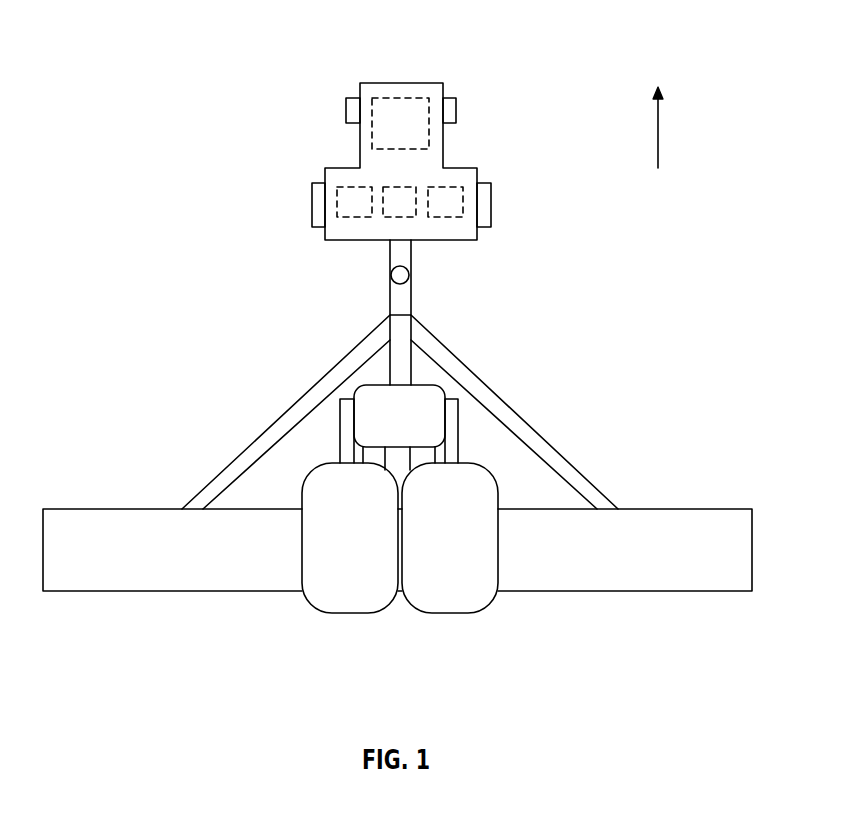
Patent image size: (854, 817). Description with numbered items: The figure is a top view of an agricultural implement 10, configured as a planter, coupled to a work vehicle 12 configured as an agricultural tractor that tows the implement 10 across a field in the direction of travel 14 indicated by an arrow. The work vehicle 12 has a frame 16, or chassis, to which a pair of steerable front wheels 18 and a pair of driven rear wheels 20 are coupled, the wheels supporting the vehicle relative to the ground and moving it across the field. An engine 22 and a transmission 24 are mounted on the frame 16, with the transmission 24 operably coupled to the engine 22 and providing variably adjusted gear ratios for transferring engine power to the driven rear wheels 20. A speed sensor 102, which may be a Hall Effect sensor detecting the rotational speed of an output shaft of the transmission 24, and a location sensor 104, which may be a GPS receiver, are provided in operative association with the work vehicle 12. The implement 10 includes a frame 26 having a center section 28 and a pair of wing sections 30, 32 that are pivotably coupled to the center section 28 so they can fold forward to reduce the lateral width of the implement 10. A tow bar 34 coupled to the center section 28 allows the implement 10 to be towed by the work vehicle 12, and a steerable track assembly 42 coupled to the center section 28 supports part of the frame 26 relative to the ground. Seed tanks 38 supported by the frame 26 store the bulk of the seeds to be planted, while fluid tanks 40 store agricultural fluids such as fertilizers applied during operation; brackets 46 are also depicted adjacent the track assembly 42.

The agricultural implement 10 is at (178, 390).
The work vehicle 12 is at (236, 52).
The direction of travel 14 is at (658, 128).
The frame 16 is at (333, 167).
The steerable front wheels 18 is at (346, 110).
The driven rear wheels 20 is at (312, 197).
The engine 22 is at (385, 97).
The transmission 24 is at (398, 188).
The frame 26 is at (397, 587).
The center section 28 is at (390, 363).
The wing section 30 is at (147, 591).
The wing section 32 is at (667, 591).
The tow bar 34 is at (402, 300).
The seed tanks 38 is at (345, 600).
The fluid tanks 40 is at (425, 399).
The track assembly 42 is at (405, 396).
The brackets 46 is at (340, 437).
The speed sensor 102 is at (353, 219).
The location sensor 104 is at (462, 208).